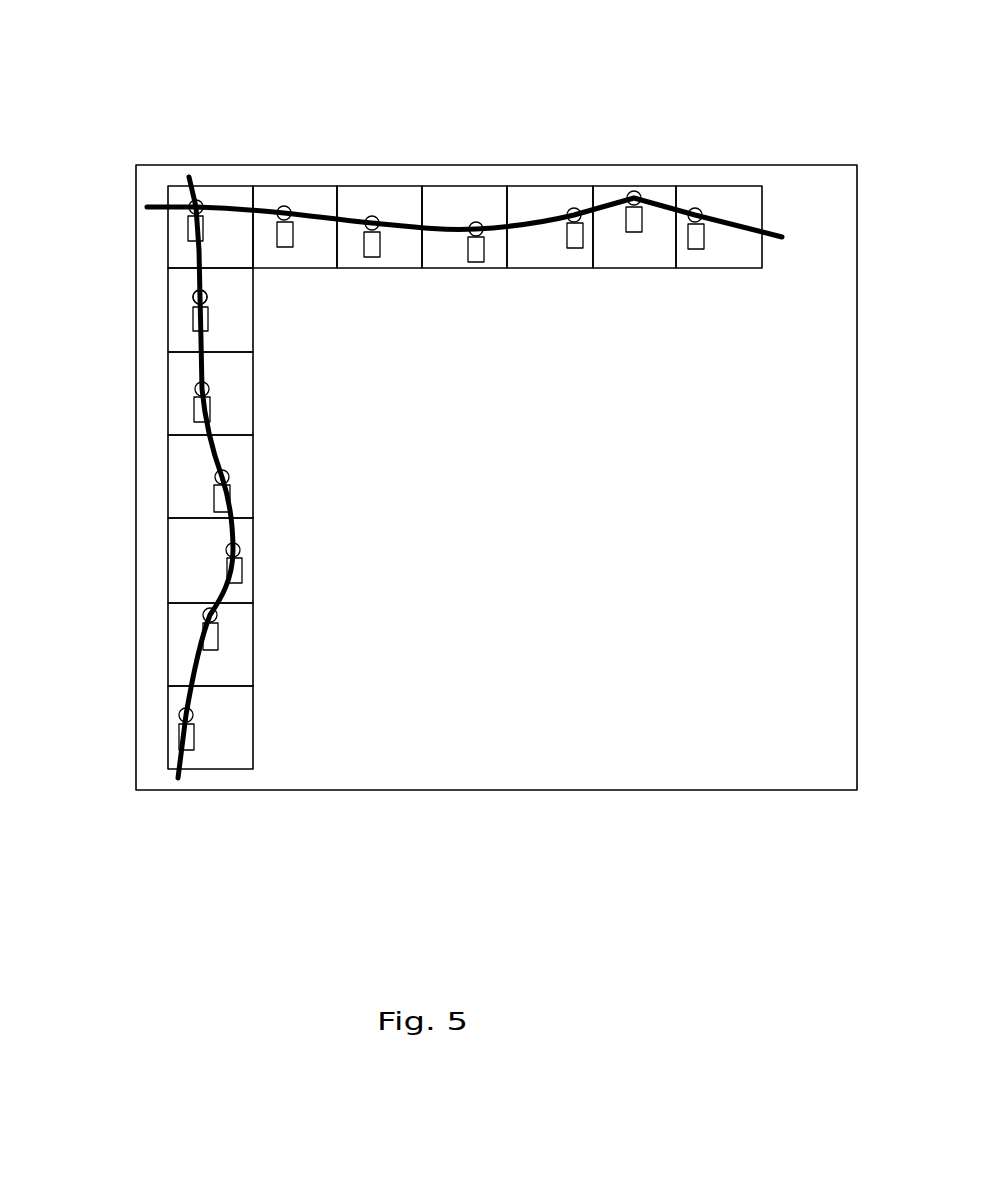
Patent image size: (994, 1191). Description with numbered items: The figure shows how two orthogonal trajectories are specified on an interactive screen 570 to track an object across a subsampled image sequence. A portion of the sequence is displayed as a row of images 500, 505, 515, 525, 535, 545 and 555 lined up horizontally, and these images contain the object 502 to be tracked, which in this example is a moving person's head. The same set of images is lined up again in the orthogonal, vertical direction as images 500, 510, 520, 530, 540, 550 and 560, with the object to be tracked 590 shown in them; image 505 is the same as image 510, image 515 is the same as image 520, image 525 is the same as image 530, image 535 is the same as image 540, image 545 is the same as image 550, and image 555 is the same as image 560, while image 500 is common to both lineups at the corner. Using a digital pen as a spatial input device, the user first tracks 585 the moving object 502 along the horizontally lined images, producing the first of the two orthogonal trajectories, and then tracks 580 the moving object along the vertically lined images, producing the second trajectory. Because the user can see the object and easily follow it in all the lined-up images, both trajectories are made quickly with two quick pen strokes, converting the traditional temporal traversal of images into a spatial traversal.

The image 500 is at (168, 238).
The object to be tracked 502 is at (703, 224).
The image 505 is at (283, 185).
The image 510 is at (168, 320).
The image 515 is at (380, 185).
The image 520 is at (168, 393).
The image 525 is at (463, 185).
The image 530 is at (168, 477).
The image 535 is at (562, 185).
The image 540 is at (168, 549).
The image 545 is at (646, 185).
The image 550 is at (168, 654).
The image 555 is at (740, 185).
The image 560 is at (168, 727).
The interactive screen 570 is at (824, 163).
The second trajectory tracking 580 is at (217, 450).
The first trajectory tracking 585 is at (539, 225).
The object to be tracked 590 is at (208, 297).